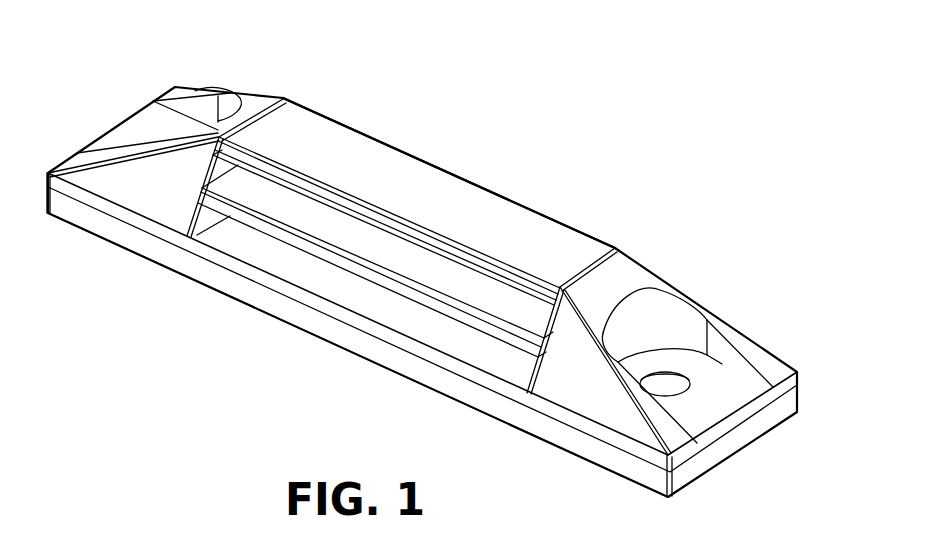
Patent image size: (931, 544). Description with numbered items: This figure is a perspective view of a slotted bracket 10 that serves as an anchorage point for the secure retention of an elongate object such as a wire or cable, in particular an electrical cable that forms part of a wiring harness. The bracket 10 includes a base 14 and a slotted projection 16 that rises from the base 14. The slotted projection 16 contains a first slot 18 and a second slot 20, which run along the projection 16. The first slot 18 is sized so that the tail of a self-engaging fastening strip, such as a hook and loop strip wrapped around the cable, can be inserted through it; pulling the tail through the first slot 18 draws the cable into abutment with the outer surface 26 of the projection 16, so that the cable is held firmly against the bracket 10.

The bracket 10 is at (722, 253).
The base 14 is at (622, 478).
The slotted projection 16 is at (590, 393).
The first slot 18 is at (247, 184).
The second slot 20 is at (510, 368).
The outer surface 26 is at (507, 217).